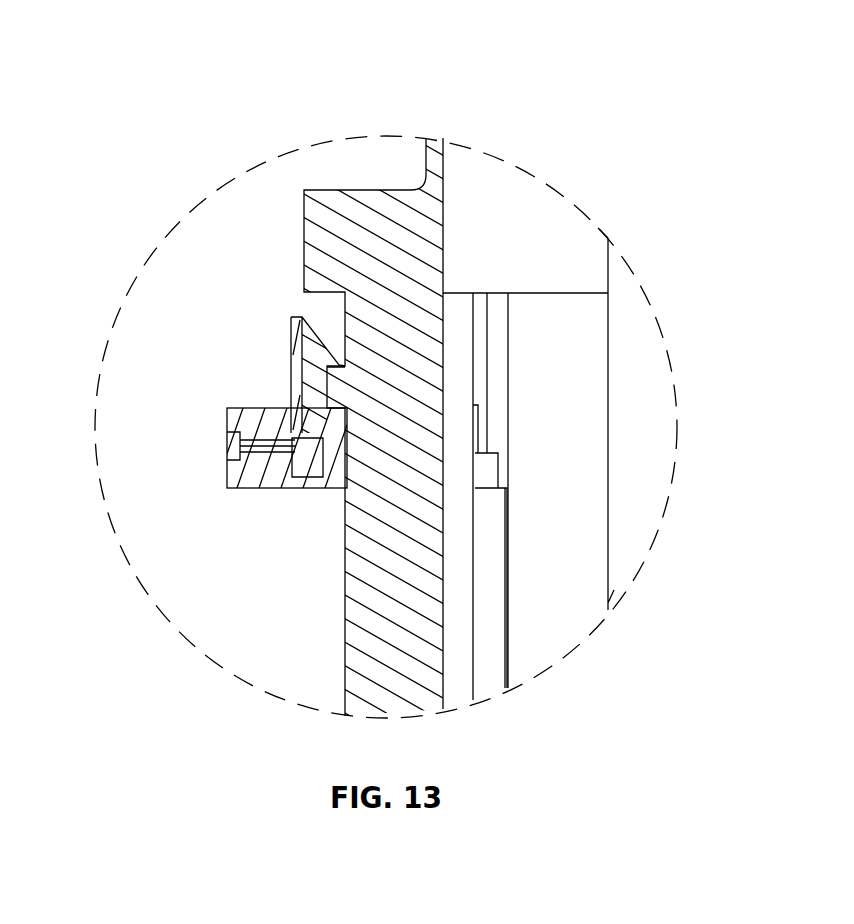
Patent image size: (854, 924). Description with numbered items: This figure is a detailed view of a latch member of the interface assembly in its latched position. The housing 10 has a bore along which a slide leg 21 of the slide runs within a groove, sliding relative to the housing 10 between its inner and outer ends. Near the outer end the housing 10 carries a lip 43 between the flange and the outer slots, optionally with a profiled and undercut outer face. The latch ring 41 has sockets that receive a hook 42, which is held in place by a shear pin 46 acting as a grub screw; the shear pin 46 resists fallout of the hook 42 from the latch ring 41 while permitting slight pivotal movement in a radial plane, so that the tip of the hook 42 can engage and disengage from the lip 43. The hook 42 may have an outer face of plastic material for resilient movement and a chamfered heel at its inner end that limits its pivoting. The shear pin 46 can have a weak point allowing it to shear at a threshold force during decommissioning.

The housing 10 is at (380, 213).
The slide leg 21 is at (490, 590).
The latch ring 41 is at (258, 487).
The hook 42 is at (314, 349).
The lip 43 is at (340, 387).
The shear pin 46 is at (240, 433).